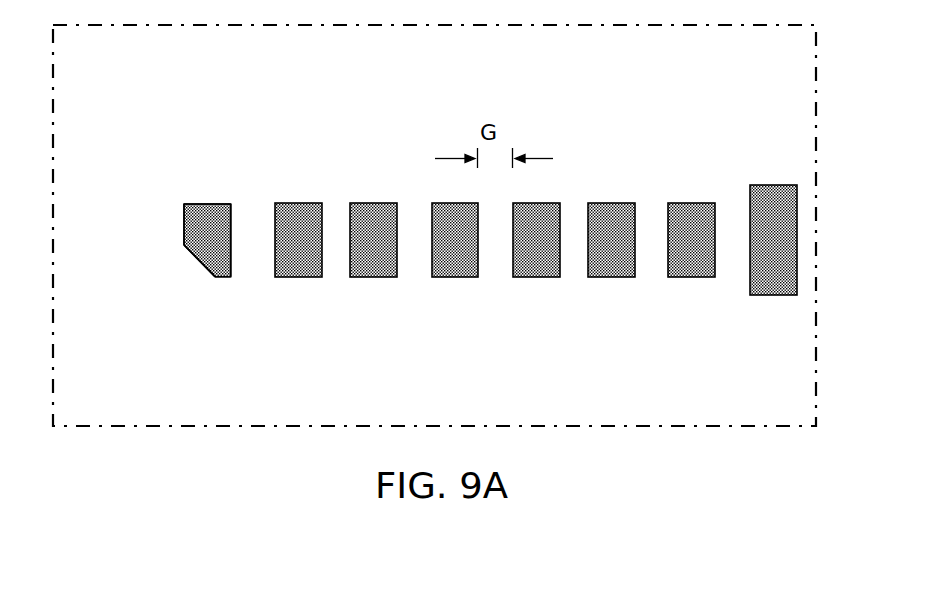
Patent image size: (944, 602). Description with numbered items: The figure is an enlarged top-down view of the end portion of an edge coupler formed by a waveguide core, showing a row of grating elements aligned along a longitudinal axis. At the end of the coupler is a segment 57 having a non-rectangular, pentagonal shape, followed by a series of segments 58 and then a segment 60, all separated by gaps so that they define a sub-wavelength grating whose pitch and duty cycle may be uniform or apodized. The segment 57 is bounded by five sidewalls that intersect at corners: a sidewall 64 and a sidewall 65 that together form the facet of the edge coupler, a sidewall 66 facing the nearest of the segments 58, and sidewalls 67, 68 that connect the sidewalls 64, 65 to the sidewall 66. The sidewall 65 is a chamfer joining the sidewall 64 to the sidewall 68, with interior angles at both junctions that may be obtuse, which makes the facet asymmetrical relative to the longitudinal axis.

The segment 57 is at (203, 230).
The segments 58 is at (305, 253).
The segments 60 is at (768, 238).
The sidewall 64 is at (184, 211).
The sidewall 65 is at (197, 260).
The sidewall 66 is at (231, 240).
The sidewall 67 is at (207, 204).
The sidewall 68 is at (217, 280).